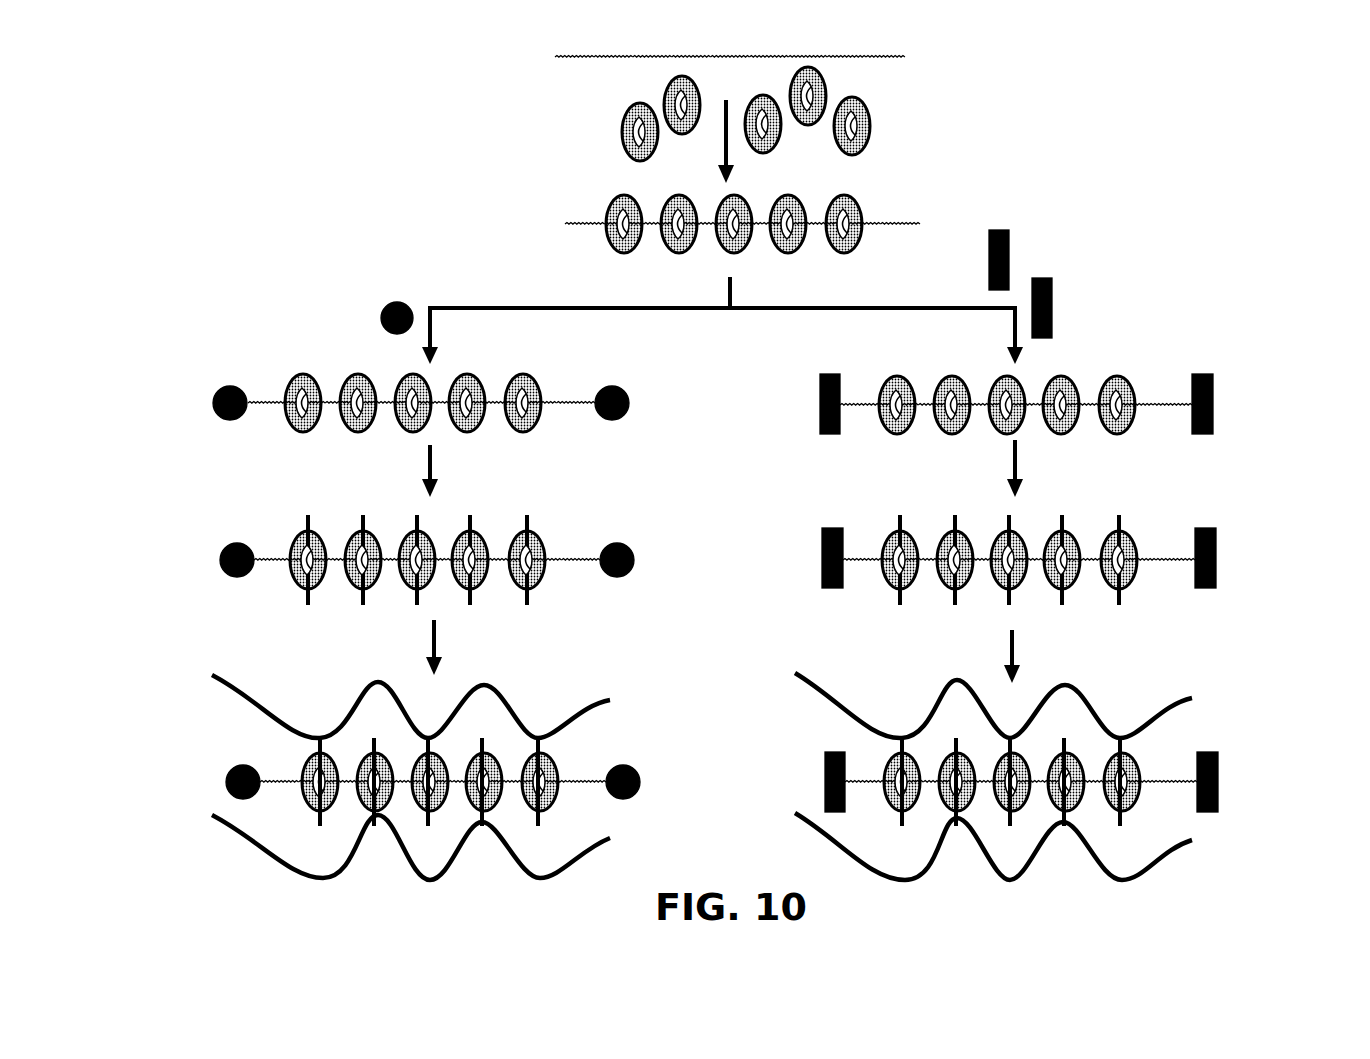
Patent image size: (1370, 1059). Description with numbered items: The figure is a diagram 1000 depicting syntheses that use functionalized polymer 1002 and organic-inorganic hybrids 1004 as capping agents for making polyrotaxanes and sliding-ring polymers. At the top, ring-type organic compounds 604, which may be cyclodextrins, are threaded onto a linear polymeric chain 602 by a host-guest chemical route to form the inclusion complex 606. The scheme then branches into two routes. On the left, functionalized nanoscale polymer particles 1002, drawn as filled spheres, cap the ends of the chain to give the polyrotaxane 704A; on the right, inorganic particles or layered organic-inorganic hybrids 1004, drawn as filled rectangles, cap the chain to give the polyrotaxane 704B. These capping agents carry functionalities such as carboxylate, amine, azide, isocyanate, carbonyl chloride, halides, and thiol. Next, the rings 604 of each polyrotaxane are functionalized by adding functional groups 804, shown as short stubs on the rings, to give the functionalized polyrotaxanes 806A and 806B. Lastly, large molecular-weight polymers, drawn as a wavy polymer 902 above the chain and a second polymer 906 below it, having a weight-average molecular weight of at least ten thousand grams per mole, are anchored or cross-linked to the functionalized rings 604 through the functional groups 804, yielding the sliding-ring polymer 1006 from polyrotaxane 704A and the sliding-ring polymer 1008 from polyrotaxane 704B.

The linear polymeric chain 602 is at (870, 55).
The ring-type organic compounds 604 is at (619, 143).
The inclusion complex 606 is at (895, 222).
The diagram 1000 is at (1112, 146).
The functionalized polymer 1002 is at (380, 318).
The organic-inorganic hybrids 1004 is at (1009, 259).
The polyrotaxane 704A is at (570, 410).
The polyrotaxane 704B is at (1160, 410).
The functionalized polyrotaxane 806A is at (575, 565).
The functionalized polyrotaxane 806B is at (1160, 565).
The functional groups 804 is at (436, 746).
The polymer 902 is at (238, 678).
The second polymer 906 is at (557, 880).
The sliding-ring polymer 1006 is at (176, 782).
The sliding-ring polymer 1008 is at (1250, 816).